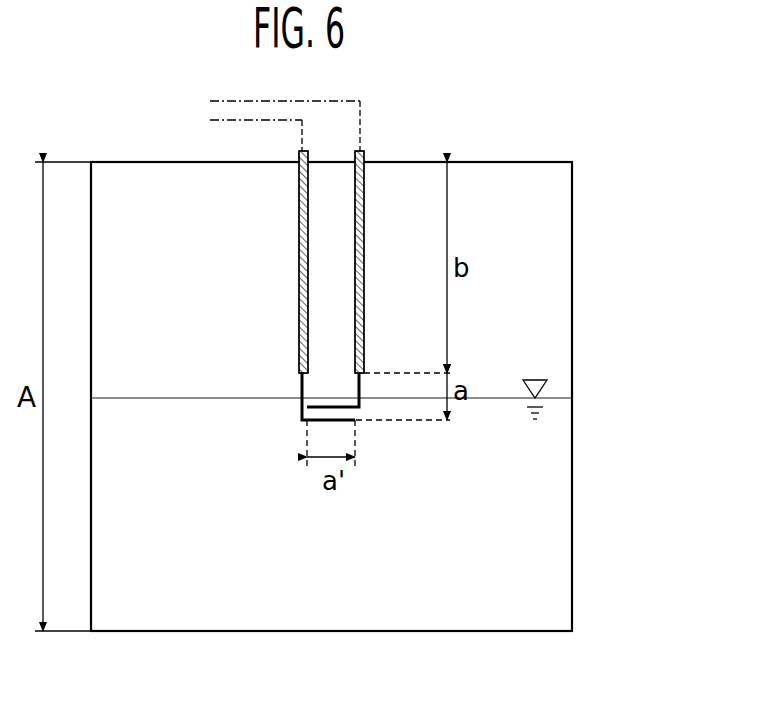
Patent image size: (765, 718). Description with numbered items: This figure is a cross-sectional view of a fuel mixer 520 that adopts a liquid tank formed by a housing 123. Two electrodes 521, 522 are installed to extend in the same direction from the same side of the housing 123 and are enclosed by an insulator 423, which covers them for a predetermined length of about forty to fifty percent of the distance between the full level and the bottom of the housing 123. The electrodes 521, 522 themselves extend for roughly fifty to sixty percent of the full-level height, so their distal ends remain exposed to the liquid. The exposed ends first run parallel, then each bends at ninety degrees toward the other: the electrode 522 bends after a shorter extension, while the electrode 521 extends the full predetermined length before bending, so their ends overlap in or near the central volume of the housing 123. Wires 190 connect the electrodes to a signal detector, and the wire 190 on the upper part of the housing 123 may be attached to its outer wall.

The housing 123 is at (572, 232).
The wire 190 is at (302, 133).
The insulator 423 is at (299, 243).
The fuel mixer 520 is at (622, 118).
The electrode 521 is at (300, 421).
The electrode 522 is at (357, 421).